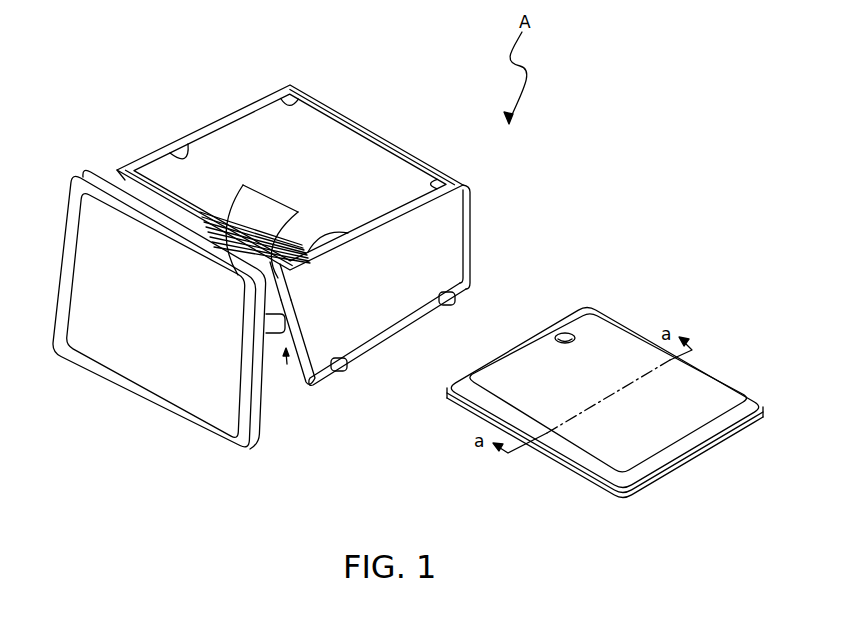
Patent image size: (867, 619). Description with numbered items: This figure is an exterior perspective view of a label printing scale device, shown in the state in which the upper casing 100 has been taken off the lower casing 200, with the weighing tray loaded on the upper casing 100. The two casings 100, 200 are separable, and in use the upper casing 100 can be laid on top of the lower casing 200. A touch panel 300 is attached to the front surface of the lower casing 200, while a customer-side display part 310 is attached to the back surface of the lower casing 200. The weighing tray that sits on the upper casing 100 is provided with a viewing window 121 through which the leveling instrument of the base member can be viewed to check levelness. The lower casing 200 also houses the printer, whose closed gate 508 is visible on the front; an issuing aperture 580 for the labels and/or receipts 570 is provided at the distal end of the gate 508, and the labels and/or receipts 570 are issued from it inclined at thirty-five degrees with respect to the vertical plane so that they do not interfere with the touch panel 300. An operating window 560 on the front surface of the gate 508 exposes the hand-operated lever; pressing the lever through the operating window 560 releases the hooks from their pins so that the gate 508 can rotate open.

The upper casing 100 is at (592, 385).
The viewing window 121 is at (563, 331).
The lower casing 200 is at (413, 273).
The touch panel 300 is at (125, 358).
The customer-side display part 310 is at (473, 192).
The gate 508 is at (290, 365).
The operating window 560 is at (265, 352).
The labels and/or receipts 570 is at (242, 190).
The issuing aperture 580 is at (283, 283).